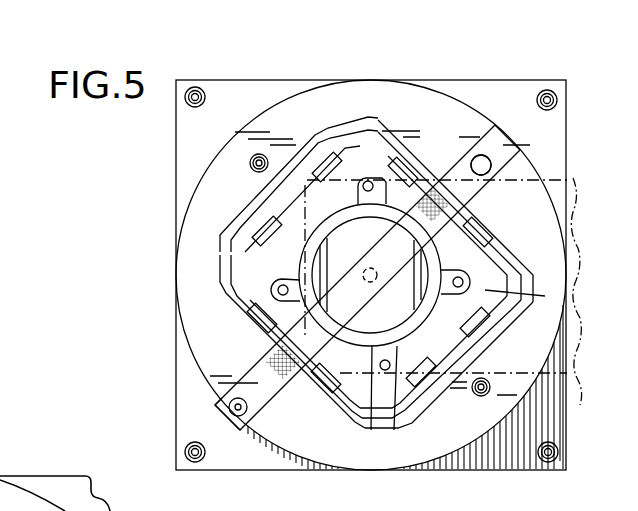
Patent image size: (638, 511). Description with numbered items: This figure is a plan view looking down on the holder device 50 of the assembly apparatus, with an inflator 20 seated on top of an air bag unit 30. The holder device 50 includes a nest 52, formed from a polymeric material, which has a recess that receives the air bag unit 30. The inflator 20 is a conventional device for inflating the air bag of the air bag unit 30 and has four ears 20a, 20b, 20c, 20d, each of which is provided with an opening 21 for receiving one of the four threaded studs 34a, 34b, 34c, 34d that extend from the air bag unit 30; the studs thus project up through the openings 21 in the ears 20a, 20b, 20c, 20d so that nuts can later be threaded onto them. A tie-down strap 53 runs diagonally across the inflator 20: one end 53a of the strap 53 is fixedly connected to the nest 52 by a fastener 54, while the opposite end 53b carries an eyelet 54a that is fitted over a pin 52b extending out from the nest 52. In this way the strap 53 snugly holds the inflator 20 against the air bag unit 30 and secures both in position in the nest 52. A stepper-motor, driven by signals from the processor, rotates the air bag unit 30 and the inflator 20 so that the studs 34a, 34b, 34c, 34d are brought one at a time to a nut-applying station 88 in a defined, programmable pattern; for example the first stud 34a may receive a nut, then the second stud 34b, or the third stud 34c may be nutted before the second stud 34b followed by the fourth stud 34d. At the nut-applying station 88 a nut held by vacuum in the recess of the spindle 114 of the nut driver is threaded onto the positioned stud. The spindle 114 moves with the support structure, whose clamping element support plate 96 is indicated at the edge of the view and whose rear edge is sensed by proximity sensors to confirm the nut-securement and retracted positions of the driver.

The inflator 20 is at (372, 272).
The ear 20a is at (467, 262).
The ear 20b is at (365, 197).
The ear 20c is at (290, 303).
The ear 20d is at (398, 353).
The opening 21 is at (360, 183).
The air bag unit 30 is at (335, 262).
The first stud 34a is at (460, 283).
The second stud 34b is at (369, 178).
The third stud 34c is at (272, 294).
The fourth stud 34d is at (383, 370).
The holder device 50 is at (483, 70).
The nest 52 is at (415, 95).
The pin 52b is at (216, 403).
The tie-down strap 53 is at (424, 205).
The end of strap 53a is at (482, 155).
The opposite end of strap 53b is at (228, 410).
The fastener 54 is at (491, 166).
The eyelet 54a is at (243, 428).
The nut-applying station 88 is at (497, 267).
The clamping element support plate 96 is at (592, 302).
The spindle 114 is at (545, 296).